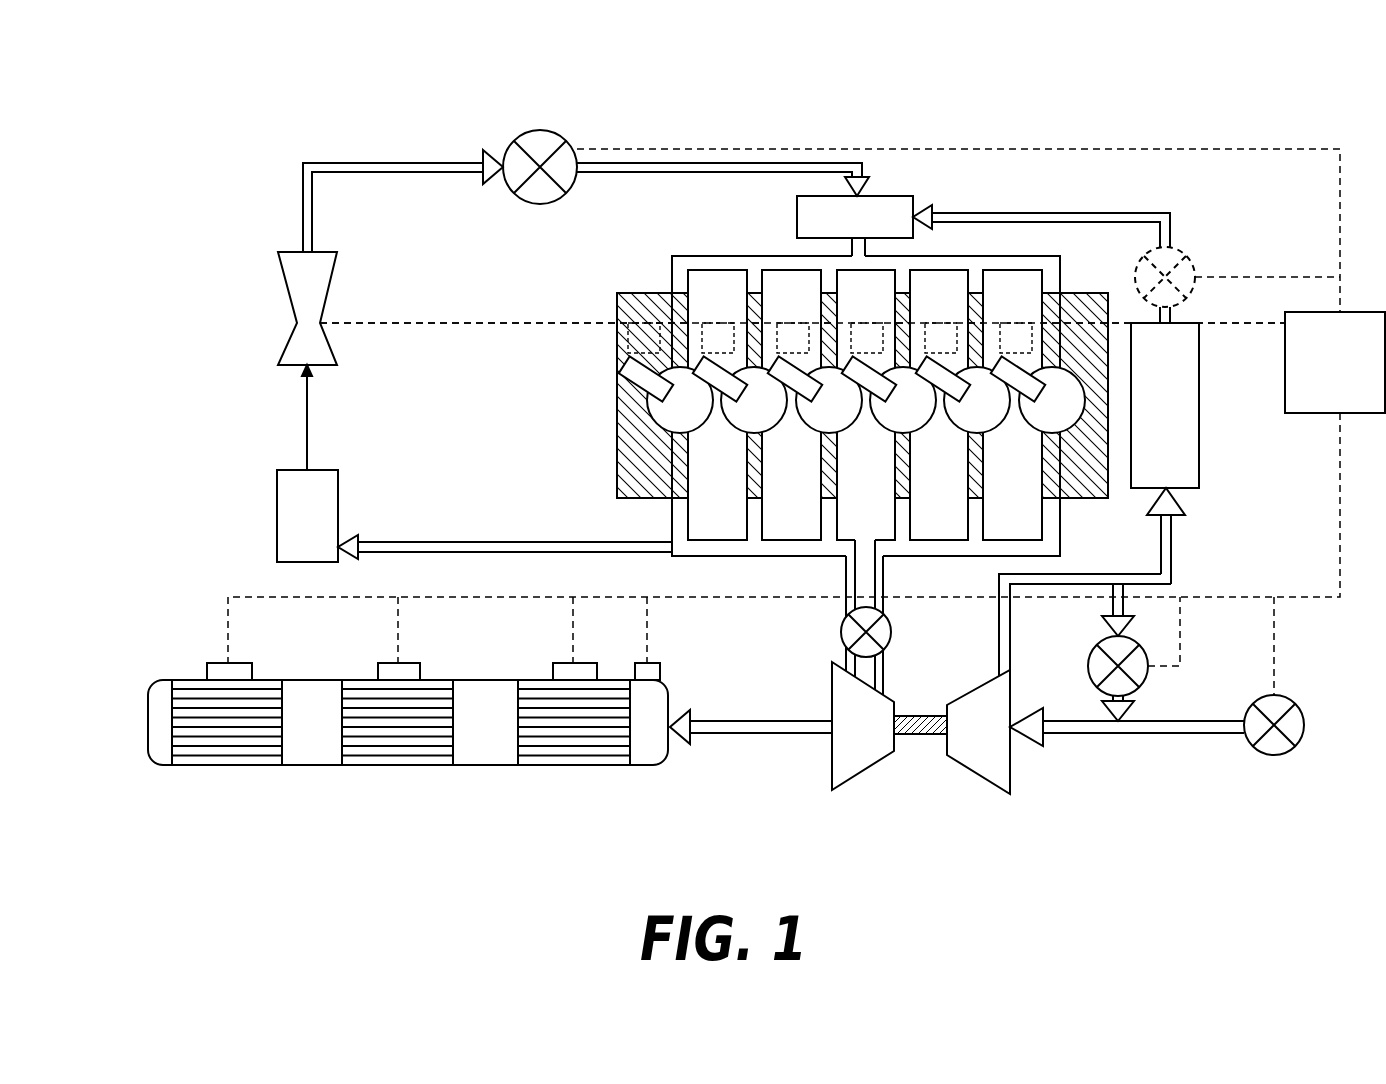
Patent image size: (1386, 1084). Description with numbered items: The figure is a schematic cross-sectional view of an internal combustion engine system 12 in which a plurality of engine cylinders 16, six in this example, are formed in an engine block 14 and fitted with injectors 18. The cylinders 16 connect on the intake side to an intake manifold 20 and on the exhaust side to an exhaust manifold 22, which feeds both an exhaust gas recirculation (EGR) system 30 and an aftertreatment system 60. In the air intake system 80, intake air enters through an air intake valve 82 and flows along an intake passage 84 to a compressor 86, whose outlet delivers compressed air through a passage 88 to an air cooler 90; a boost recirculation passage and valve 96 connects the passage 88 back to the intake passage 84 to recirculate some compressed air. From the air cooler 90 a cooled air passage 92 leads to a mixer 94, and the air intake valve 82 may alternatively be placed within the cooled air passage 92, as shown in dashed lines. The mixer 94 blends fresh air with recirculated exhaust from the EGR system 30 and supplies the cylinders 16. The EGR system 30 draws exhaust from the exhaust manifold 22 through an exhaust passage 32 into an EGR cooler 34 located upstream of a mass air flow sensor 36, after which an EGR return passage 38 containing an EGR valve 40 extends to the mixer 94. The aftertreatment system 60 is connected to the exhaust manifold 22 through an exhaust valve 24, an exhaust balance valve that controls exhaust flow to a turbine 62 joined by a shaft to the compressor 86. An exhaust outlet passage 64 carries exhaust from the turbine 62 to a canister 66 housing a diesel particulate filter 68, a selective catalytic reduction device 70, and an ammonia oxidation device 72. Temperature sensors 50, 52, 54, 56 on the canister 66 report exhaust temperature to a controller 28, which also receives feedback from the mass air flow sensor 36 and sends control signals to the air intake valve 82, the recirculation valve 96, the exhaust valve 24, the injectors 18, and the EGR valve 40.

The internal combustion engine system 12 is at (213, 143).
The engine block 14 is at (617, 468).
The engine cylinders 16 is at (660, 410).
The injectors 18 is at (640, 373).
The intake manifold 20 is at (720, 262).
The exhaust manifold 22 is at (672, 520).
The exhaust valve 24 is at (891, 632).
The controller 28 is at (1326, 375).
The exhaust gas recirculation (EGR) system 30 is at (322, 98).
The exhaust passage 32 is at (450, 542).
The EGR cooler 34 is at (330, 488).
The mass air flow sensor 36 is at (295, 282).
The EGR return passage 38 is at (418, 163).
The EGR valve 40 is at (540, 138).
The temperature sensor 50 is at (657, 672).
The temperature sensor 52 is at (555, 672).
The temperature sensor 54 is at (380, 672).
The temperature sensor 56 is at (215, 672).
The aftertreatment system 60 is at (188, 580).
The turbine 62 is at (855, 760).
The exhaust outlet passage 64 is at (760, 733).
The canister 66 is at (655, 757).
The diesel particulate filter (DPF) 68 is at (560, 757).
The selective catalytic reduction (SCR) device 70 is at (397, 757).
The ammonia oxidation device 72 is at (228, 757).
The air intake system 80 is at (1237, 503).
The air intake valve 82 is at (1270, 745).
The intake passage 84 is at (1160, 733).
The compressor 86 is at (975, 755).
The passage 88 is at (1171, 548).
The air cooler 90 is at (1198, 465).
The cooled air passage 92 is at (1168, 240).
The mixer 94 is at (900, 205).
The boost recirculation passage and valve 96 is at (1095, 666).